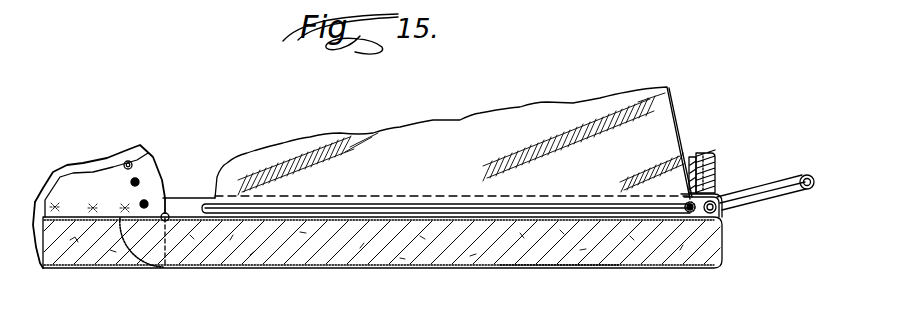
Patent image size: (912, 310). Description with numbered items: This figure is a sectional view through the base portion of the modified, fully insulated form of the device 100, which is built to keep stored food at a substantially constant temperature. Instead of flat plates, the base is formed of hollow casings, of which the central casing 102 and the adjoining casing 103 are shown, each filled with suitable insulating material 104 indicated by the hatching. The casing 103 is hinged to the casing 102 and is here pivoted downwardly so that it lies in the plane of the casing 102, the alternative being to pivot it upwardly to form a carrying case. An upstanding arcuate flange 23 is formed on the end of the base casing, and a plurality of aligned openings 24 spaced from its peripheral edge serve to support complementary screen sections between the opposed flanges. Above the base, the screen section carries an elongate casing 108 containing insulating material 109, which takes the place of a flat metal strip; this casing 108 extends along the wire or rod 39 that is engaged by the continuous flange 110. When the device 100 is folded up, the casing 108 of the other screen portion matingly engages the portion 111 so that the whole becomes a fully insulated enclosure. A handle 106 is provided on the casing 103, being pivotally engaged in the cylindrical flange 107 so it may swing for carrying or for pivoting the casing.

The arcuate flange 23 is at (100, 185).
The aligned openings 24 is at (148, 203).
The wire or rod 39 is at (685, 217).
The fully insulated device 100 is at (600, 88).
The hollow casing 102 is at (97, 267).
The hollow casing 103 is at (552, 267).
The insulating material 104 is at (453, 240).
The handle 106 is at (767, 197).
The cylindrical flange 107 is at (717, 193).
The elongate casing 108 is at (155, 268).
The insulating material 109 is at (708, 155).
The continuous flange 110 is at (703, 220).
The mating portion 111 is at (693, 157).